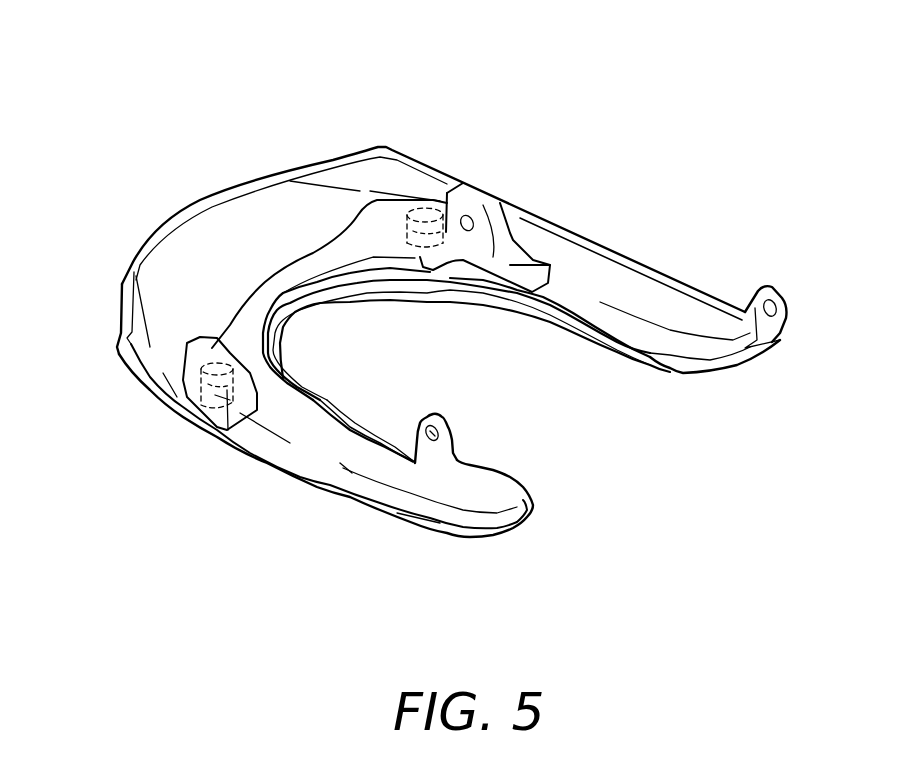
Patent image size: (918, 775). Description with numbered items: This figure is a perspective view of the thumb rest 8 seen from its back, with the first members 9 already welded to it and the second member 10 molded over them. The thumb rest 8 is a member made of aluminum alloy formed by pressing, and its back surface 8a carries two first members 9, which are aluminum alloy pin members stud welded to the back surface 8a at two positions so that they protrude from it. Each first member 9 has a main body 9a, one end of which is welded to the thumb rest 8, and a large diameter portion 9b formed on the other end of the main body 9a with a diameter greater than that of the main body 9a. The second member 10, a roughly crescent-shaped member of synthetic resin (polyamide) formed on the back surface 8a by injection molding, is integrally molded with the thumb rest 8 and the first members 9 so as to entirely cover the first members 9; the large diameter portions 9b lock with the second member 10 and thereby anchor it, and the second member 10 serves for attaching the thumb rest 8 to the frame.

The thumb rest 8 is at (504, 150).
The back surface 8a is at (573, 278).
The first members 9 is at (433, 200).
The main body 9a is at (473, 233).
The large diameter portion 9b is at (472, 216).
The second member 10 is at (313, 262).